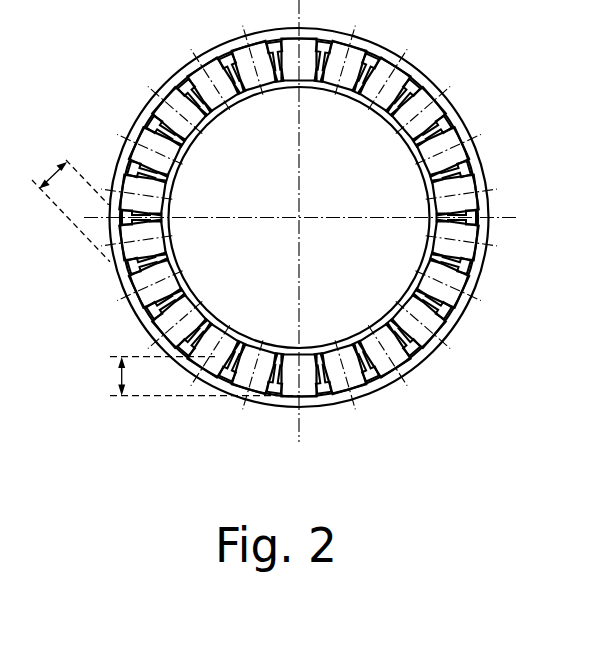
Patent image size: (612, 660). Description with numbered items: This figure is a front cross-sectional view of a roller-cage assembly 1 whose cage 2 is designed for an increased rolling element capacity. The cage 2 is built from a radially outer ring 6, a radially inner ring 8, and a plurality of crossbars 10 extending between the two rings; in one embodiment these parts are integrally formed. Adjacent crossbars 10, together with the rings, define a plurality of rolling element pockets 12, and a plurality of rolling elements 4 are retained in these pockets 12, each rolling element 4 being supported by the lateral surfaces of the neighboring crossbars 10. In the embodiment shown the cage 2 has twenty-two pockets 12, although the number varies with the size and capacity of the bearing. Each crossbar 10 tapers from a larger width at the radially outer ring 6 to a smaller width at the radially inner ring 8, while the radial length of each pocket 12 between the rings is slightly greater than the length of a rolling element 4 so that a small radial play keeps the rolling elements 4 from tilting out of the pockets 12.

The roller-cage assembly 1 is at (296, 247).
The cage 2 is at (455, 113).
The rolling elements 4 is at (470, 235).
The radially outer ring 6 is at (443, 332).
The radially inner ring 8 is at (198, 113).
The crossbars 10 is at (276, 267).
The rolling element pockets 12 is at (324, 386).